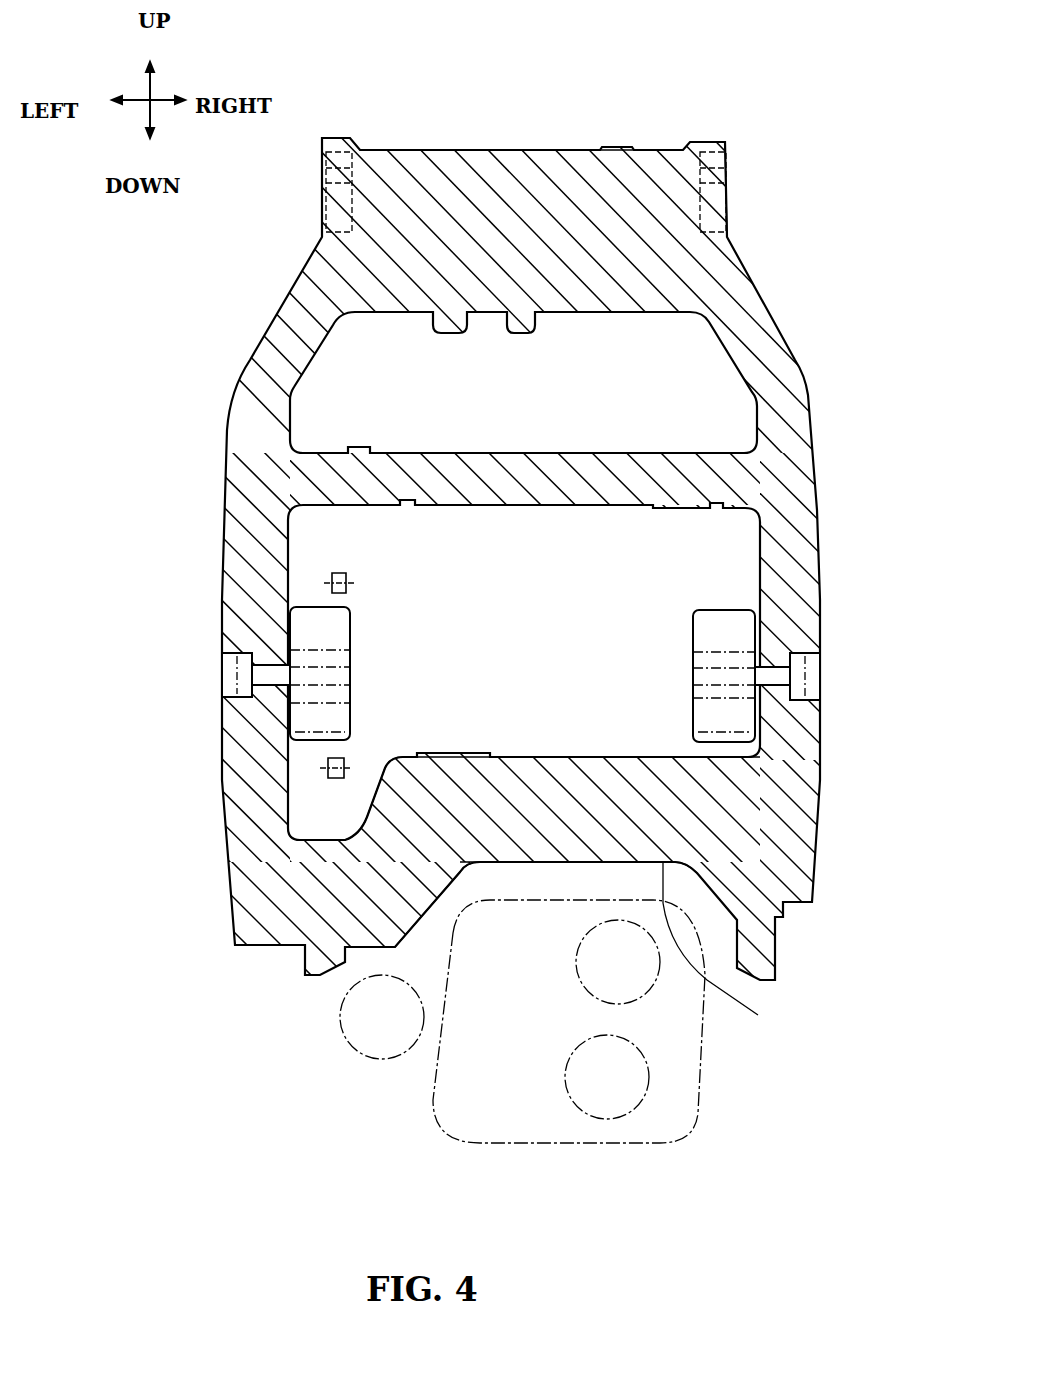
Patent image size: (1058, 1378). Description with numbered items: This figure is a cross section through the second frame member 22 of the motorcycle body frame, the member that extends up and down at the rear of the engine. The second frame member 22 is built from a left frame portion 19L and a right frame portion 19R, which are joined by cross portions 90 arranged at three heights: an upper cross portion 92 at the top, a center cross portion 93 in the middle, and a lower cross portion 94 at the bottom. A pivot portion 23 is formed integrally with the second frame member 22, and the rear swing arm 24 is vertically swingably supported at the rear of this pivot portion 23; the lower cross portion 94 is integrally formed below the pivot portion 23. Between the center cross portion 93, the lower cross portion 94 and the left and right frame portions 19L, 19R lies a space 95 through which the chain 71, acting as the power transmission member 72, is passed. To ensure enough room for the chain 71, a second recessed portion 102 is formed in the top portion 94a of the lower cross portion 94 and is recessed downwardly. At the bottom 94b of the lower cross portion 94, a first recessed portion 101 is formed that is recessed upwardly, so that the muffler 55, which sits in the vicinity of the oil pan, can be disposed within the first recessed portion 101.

The second frame member 22 is at (806, 314).
The cross portions 90 is at (641, 138).
The upper cross portion 92 is at (567, 147).
The left frame portion 19L is at (237, 559).
The right frame portion 19R is at (806, 553).
The center cross portion 93 is at (513, 508).
The lower cross portion 94 is at (516, 754).
The top portion 94a is at (406, 758).
The bottom 94b is at (420, 873).
The space 95 is at (308, 583).
The rear swing arm 24 is at (352, 622).
The pivot portion 23 is at (222, 676).
The chain 71 is at (208, 781).
The power transmission member 72 is at (328, 778).
The second recessed portion 102 is at (304, 835).
The first recessed portion 101 is at (735, 958).
The muffler 55 is at (698, 1118).